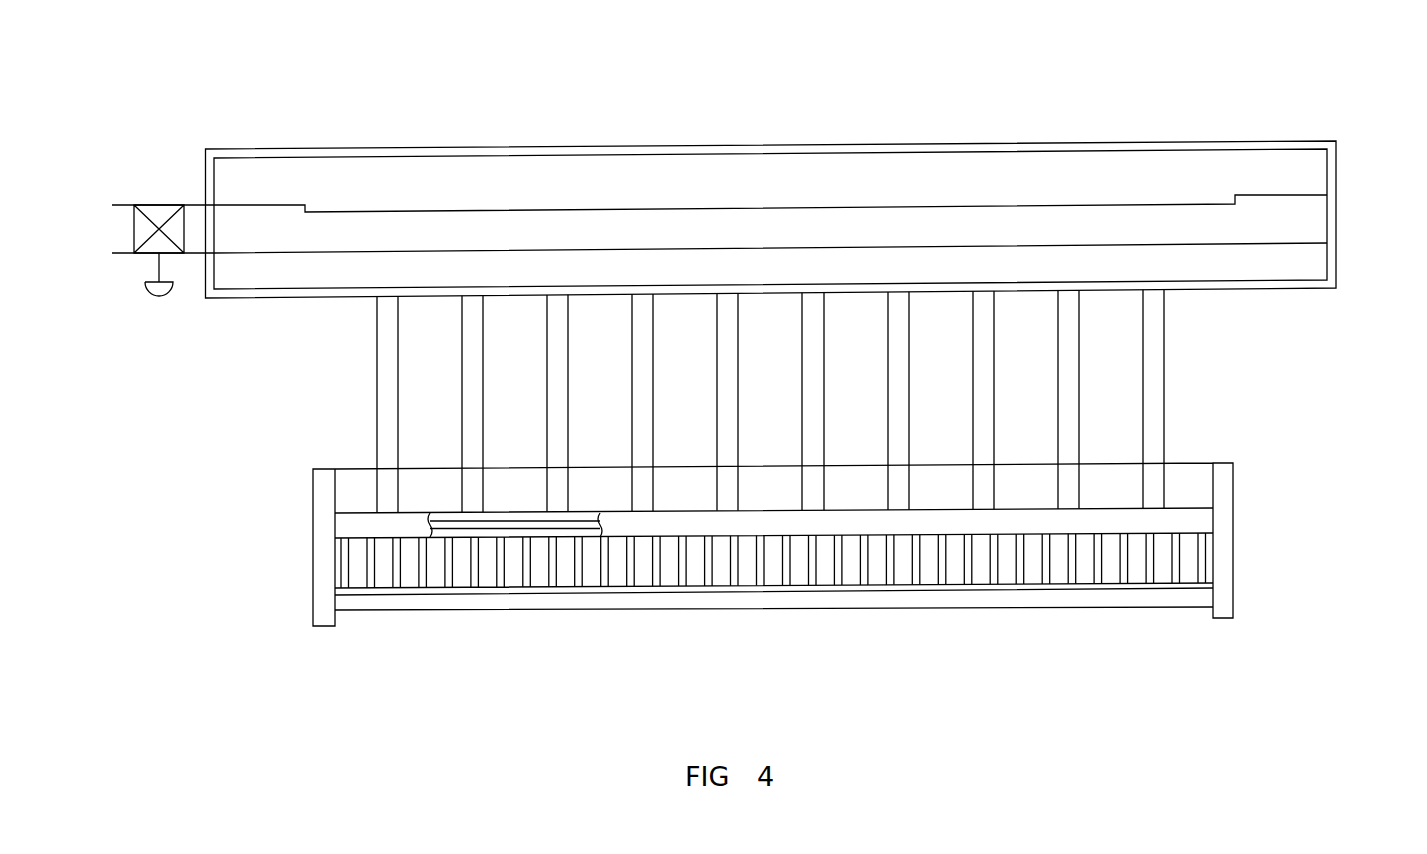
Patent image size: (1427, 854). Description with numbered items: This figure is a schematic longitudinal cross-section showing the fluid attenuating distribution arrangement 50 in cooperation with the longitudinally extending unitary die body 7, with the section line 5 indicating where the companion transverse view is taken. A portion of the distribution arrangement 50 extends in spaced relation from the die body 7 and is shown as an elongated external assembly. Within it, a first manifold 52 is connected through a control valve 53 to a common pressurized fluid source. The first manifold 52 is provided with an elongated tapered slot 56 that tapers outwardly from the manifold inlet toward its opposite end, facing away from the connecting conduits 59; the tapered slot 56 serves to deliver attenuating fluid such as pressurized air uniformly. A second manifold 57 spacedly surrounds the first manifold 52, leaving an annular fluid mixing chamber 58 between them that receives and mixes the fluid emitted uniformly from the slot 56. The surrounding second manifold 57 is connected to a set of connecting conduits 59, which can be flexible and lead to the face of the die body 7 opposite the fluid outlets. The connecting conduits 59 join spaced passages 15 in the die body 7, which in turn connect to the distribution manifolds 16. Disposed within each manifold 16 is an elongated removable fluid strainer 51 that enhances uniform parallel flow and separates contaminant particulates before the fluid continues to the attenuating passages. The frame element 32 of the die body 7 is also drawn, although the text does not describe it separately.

The section line 5- 5 is at (87, 300).
The unitary die body 7 is at (1252, 535).
The spaced passages 15 is at (393, 485).
The fluid attenuating manifold inlet 16 is at (500, 538).
The conveyor frame 32 is at (665, 592).
The fluid distribution arrangement 50 is at (1353, 288).
The removable fluid filter or strainer 51 is at (530, 630).
The first manifold 52 is at (622, 222).
The control valve 53 is at (155, 212).
The elongated tapered slot 56 is at (722, 208).
The second manifold 57 is at (820, 147).
The annular fluid mixing chamber 58 is at (1235, 267).
The connecting conduit 59 is at (1154, 402).